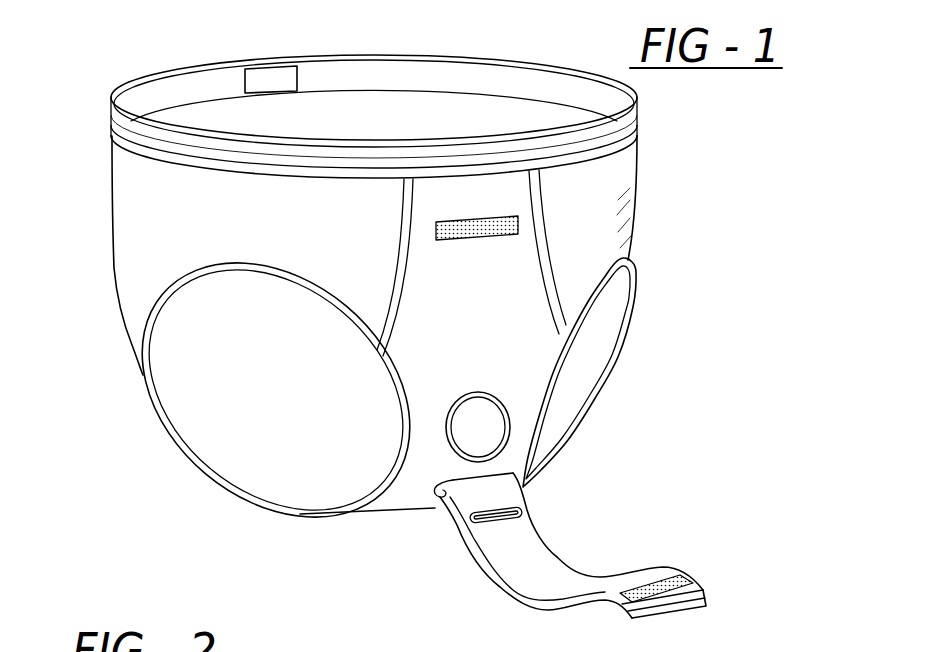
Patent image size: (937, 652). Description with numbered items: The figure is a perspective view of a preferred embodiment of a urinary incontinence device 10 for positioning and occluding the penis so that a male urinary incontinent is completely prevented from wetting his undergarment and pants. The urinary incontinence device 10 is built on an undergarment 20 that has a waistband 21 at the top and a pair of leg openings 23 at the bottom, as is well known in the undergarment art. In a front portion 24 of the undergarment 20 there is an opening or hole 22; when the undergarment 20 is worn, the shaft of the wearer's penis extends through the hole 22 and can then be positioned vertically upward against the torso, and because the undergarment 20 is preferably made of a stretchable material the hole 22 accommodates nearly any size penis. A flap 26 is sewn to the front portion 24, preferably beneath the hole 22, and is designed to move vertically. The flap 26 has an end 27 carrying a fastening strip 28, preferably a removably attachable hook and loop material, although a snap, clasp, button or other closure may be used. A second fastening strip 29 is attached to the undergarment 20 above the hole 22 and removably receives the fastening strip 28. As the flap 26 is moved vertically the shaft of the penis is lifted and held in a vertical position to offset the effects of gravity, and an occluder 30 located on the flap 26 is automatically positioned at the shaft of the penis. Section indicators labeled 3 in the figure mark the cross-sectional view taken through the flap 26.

The urinary incontinence device 10 is at (622, 552).
The undergarment 20 is at (118, 290).
The waistband 21 is at (215, 78).
The hole 22 is at (475, 408).
The leg openings 23 is at (297, 517).
The front portion 24 is at (408, 518).
The flap 26 is at (654, 568).
The end 27 is at (708, 593).
The fastening strip 28 is at (658, 591).
The second fastening strip 29 is at (458, 240).
The occluder 30 is at (522, 509).
The section line for FIG. 3 is at (476, 378).